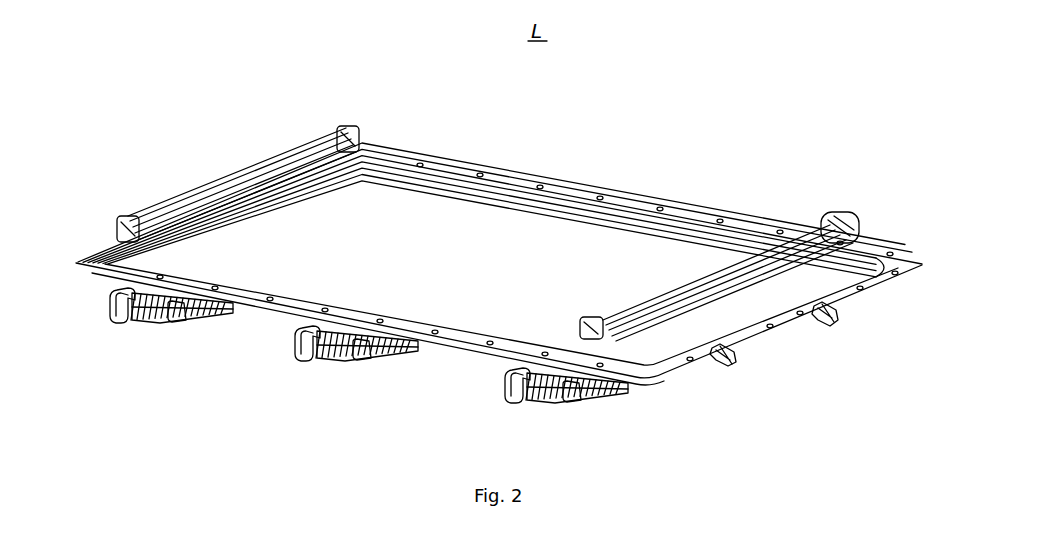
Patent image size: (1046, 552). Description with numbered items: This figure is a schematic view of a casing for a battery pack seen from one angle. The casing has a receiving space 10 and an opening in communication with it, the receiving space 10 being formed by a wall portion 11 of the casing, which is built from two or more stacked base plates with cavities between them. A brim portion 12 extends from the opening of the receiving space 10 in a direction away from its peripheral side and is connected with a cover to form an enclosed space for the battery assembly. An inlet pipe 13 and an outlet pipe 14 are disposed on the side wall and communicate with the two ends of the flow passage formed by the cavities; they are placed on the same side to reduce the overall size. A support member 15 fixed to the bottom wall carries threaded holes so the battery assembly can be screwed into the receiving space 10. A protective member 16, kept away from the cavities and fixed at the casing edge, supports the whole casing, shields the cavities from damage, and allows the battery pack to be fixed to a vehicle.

The receiving space 10 is at (478, 208).
The wall portion 11 is at (258, 197).
The brim portion 12 is at (648, 197).
The inlet pipe 13 is at (835, 322).
The outlet pipe 14 is at (730, 356).
The support member 15 is at (352, 131).
The protective member 16 is at (158, 318).